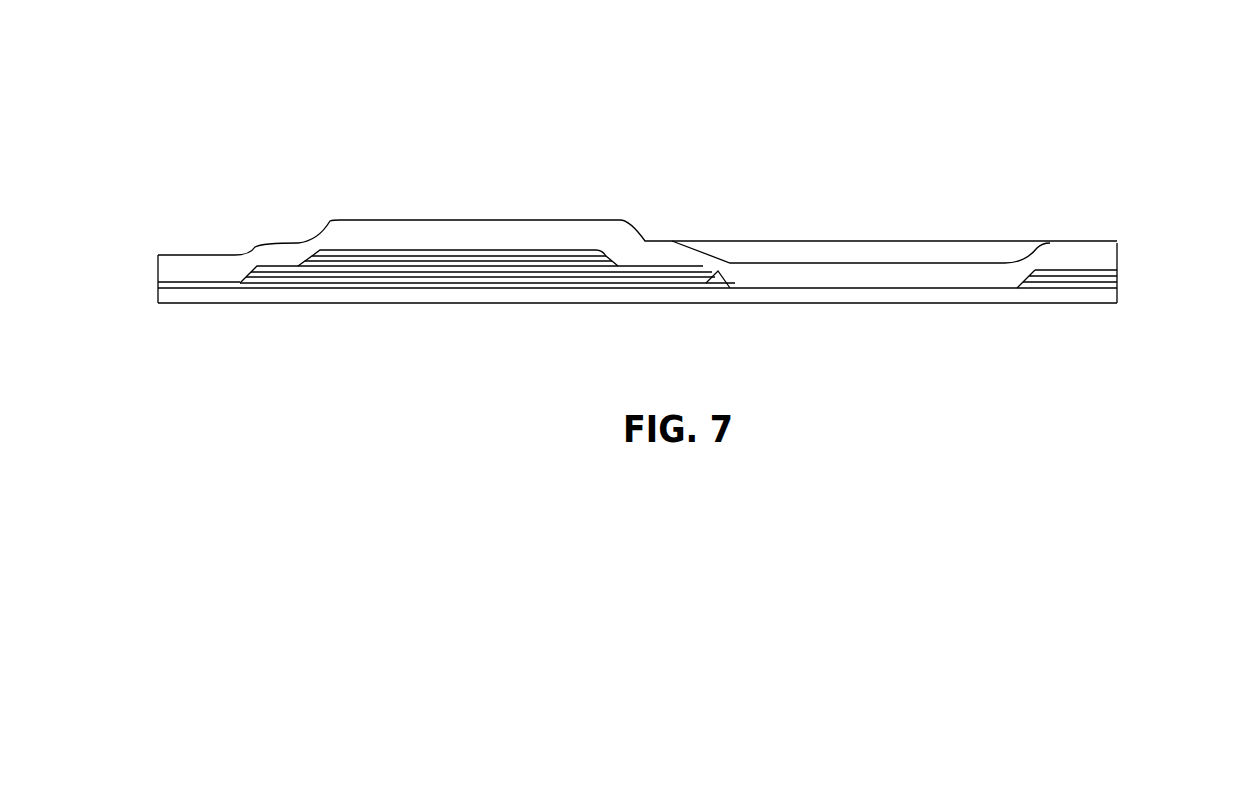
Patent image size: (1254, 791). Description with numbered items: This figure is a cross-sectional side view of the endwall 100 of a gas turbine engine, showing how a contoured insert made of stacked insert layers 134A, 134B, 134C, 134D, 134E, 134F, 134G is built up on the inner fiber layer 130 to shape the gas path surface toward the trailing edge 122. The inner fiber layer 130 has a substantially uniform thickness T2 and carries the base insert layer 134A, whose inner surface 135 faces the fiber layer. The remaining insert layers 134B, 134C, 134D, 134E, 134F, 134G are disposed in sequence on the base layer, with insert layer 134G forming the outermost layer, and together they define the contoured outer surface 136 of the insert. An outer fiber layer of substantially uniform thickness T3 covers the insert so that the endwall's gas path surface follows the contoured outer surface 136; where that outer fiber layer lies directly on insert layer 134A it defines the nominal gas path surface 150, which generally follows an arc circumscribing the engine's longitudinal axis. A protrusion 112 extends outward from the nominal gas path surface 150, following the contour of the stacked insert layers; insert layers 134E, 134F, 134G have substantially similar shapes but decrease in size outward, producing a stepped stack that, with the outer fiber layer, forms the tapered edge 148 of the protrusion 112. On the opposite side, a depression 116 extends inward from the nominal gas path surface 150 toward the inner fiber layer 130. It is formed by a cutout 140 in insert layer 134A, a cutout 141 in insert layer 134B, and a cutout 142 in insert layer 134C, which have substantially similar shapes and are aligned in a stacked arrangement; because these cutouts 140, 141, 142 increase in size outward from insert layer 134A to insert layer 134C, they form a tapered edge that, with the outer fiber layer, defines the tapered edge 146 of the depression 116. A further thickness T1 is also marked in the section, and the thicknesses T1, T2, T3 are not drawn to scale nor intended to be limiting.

The endwall 100 is at (1106, 103).
The protrusion 112 is at (470, 220).
The depression 116 is at (788, 263).
The trailing edge 122 is at (1050, 257).
The inner fiber layer 130 is at (1025, 298).
The insert layer 134A is at (1092, 284).
The insert layer 134B is at (1117, 279).
The insert layer 134C is at (1117, 271).
The insert layer 134D is at (360, 268).
The insert layer 134E is at (318, 261).
The insert layer 134F is at (323, 256).
The insert layer 134G is at (362, 249).
The inner surface 135 is at (400, 310).
The contoured outer surface 136 is at (378, 228).
The cutout 140 is at (733, 283).
The cutout 141 is at (716, 273).
The cutout 142 is at (703, 268).
The tapered edge 146 is at (1008, 262).
The tapered edge 148 is at (662, 240).
The nominal gas path surface 150 is at (207, 233).
The thickness T1 is at (144, 238).
The thickness T2 is at (848, 245).
The thickness T3 is at (912, 225).